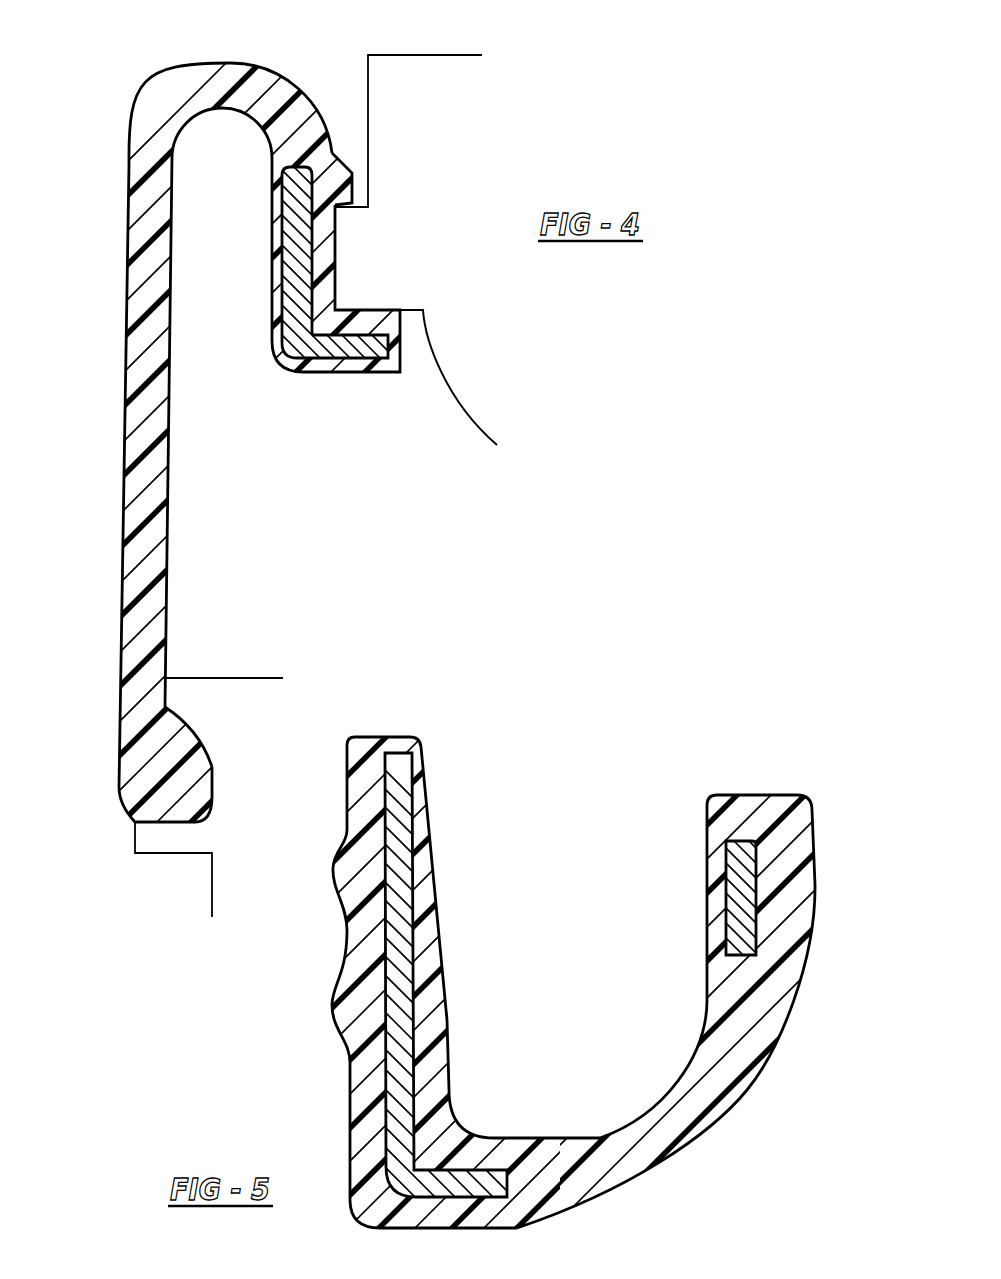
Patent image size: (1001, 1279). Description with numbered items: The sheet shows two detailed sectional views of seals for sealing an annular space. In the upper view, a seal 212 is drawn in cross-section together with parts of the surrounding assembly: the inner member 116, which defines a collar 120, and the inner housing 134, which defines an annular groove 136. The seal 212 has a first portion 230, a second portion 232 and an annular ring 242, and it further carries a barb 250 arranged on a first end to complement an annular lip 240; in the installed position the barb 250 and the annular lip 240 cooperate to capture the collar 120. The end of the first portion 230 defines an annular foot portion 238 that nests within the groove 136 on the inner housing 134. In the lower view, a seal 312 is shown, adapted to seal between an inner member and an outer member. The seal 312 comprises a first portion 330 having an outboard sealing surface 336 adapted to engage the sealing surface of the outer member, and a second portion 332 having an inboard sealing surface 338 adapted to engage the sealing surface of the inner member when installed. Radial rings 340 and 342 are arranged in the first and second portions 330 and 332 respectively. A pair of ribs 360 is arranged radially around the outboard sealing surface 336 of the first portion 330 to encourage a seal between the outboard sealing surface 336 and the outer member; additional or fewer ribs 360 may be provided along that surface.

In FIG. 4, the inner member 116 is at (437, 78).
In FIG. 4, the collar 120 is at (367, 267).
In FIG. 4, the inner housing 134 is at (250, 740).
In FIG. 4, the annular groove 136 is at (188, 750).
In FIG. 4, the seal 212 is at (197, 90).
In FIG. 4, the first portion 230 is at (145, 378).
In FIG. 4, the second portion 232 is at (352, 370).
In FIG. 4, the annular foot portion 238 is at (190, 790).
In FIG. 4, the annular lip 240 is at (387, 325).
In FIG. 4, the annular ring 242 is at (300, 257).
In FIG. 4, the barb 250 is at (353, 182).
In FIG. 5, the seal 312 is at (433, 820).
In FIG. 5, the first portion 330 is at (352, 752).
In FIG. 5, the second portion 332 is at (787, 844).
In FIG. 5, the outboard sealing surface 336 is at (348, 1087).
In FIG. 5, the inboard sealing surface 338 is at (817, 905).
In FIG. 5, the radial ring 340 is at (400, 960).
In FIG. 5, the radial ring 342 is at (735, 869).
In FIG. 5, the ribs 360 is at (340, 987).